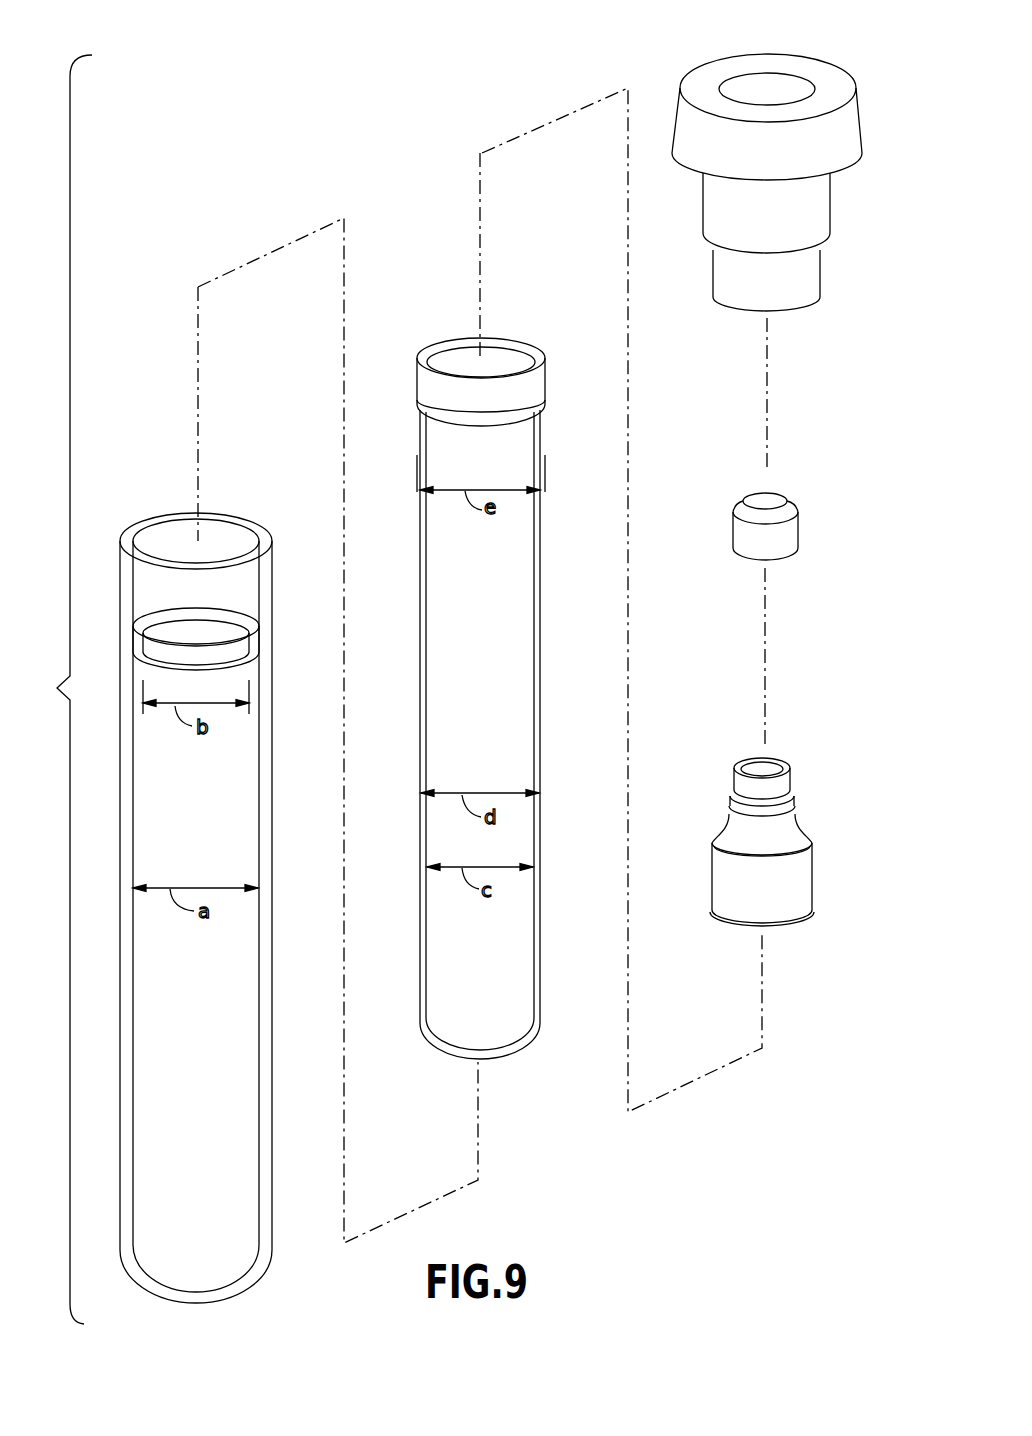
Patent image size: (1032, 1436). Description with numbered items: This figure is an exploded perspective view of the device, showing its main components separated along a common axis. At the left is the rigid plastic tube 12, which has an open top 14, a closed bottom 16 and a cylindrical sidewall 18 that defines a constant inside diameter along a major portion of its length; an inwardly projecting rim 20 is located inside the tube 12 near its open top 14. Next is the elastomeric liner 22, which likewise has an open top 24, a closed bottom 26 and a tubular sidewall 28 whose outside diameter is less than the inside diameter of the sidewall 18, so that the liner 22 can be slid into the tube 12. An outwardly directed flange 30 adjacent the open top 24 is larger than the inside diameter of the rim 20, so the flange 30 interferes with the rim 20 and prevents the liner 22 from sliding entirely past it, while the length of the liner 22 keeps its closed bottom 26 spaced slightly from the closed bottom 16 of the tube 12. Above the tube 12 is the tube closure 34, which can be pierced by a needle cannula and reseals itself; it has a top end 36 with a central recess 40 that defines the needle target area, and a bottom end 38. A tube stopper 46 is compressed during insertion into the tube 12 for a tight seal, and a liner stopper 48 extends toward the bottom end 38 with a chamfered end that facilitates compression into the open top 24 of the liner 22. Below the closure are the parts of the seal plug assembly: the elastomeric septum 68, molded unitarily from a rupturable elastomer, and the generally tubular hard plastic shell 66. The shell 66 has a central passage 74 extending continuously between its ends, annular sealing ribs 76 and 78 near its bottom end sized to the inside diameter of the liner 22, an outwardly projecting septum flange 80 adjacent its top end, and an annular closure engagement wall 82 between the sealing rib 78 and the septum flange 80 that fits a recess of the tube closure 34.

The tube 12 is at (113, 748).
The open top 14 is at (128, 541).
The closed bottom 16 is at (245, 1278).
The cylindrical sidewall 18 is at (118, 1108).
The rim 20 is at (150, 638).
The elastomeric liner 22 is at (519, 1062).
The open top 24 is at (435, 350).
The closed bottom 26 is at (452, 1055).
The tubular sidewall 28 is at (540, 912).
The flange 30 is at (417, 382).
The tube closure 34 is at (871, 109).
The top end 36 is at (838, 80).
The bottom end 38 is at (805, 303).
The central recess 40 is at (752, 80).
The tube stopper 46 is at (832, 195).
The liner stopper 48 is at (820, 268).
The shell 66 is at (830, 830).
The elastomeric septum 68 is at (795, 505).
The central passage 74 is at (768, 768).
The annular sealing rib 76 is at (814, 910).
The annular sealing rib 78 is at (812, 847).
The septum flange 80 is at (793, 772).
The closure engagement wall 82 is at (797, 802).